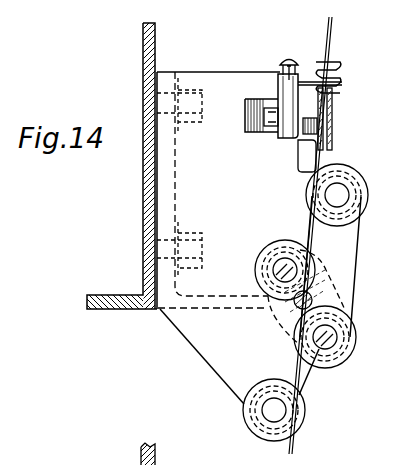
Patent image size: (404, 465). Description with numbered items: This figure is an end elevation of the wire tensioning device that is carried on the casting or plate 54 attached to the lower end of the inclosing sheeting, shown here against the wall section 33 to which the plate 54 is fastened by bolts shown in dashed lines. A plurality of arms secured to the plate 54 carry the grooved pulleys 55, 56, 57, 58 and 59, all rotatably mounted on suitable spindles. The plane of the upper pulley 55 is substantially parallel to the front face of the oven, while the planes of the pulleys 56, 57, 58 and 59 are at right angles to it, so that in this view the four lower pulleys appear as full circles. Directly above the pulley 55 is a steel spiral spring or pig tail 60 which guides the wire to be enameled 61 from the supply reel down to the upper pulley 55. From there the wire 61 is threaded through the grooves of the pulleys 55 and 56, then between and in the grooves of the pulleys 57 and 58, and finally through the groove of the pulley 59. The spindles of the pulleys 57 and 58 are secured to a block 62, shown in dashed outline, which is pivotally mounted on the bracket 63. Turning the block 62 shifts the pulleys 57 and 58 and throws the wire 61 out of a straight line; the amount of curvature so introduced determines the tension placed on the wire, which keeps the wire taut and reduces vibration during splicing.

The wall / frame plate 33 is at (146, 181).
The casting 54 is at (166, 206).
The grooved pulley 55 is at (334, 106).
The grooved pulley 56 is at (362, 184).
The grooved pulley 57 is at (280, 242).
The grooved pulley 58 is at (357, 333).
The grooved pulley 59 is at (262, 386).
The spiral spring 60 is at (341, 66).
The wire to be enameled 61 is at (328, 26).
The block 62 is at (331, 300).
The bracket 63 is at (346, 276).